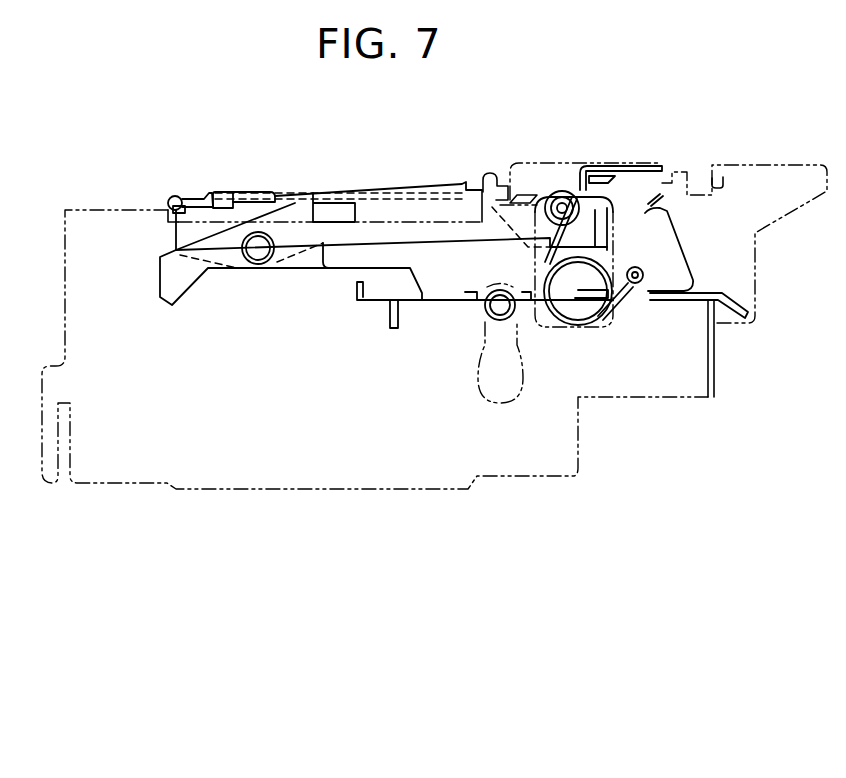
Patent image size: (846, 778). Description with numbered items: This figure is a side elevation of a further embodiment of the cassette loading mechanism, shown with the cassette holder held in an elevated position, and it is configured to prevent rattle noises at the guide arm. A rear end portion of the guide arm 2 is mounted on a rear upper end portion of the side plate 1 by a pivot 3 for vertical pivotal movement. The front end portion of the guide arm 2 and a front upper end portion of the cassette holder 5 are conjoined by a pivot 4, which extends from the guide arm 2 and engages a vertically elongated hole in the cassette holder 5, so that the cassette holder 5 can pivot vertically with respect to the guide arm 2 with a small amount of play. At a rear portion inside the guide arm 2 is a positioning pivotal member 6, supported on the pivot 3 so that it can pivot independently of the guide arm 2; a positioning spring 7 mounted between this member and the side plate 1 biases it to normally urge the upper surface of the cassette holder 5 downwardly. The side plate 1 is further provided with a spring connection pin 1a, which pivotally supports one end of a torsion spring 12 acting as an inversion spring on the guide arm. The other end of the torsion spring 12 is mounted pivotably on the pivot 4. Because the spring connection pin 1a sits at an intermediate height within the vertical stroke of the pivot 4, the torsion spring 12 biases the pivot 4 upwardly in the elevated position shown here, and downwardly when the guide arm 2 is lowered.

The side plate 1 is at (487, 176).
The spring connection pin 1a is at (653, 270).
The guide arm 2 is at (174, 292).
The pivot 3 is at (258, 252).
The pivot 4 is at (562, 205).
The cassette holder 5 is at (633, 293).
The positioning pivotal member 6 is at (175, 197).
The positioning spring 7 is at (396, 186).
The torsion spring 12 is at (594, 318).